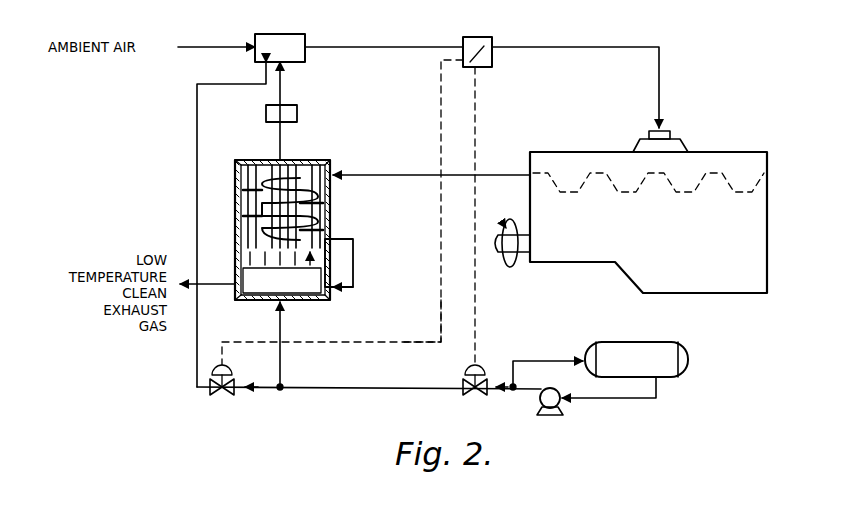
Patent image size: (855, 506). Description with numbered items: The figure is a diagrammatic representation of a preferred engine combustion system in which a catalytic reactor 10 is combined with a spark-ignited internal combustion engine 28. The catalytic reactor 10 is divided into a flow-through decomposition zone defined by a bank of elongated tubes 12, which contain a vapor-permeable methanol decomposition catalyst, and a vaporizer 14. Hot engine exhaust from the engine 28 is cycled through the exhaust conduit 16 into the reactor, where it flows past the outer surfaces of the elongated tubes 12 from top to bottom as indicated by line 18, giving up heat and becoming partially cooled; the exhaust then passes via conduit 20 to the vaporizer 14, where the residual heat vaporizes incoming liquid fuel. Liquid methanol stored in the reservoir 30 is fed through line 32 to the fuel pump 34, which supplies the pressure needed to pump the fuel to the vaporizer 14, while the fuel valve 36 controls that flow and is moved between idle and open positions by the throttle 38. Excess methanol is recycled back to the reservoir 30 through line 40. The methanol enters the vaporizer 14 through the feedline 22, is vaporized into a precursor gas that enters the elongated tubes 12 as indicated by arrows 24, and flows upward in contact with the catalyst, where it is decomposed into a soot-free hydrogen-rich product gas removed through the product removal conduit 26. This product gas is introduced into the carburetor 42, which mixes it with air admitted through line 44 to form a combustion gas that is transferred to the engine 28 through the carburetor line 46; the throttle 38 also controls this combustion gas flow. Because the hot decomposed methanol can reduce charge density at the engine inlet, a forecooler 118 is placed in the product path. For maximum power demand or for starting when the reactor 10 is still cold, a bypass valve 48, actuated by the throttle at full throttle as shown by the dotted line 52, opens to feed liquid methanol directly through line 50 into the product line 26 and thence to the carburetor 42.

The catalytic reactor 10 is at (285, 207).
The elongated tubes 12 is at (243, 165).
The vaporizer 14 is at (323, 298).
The exhaust conduit 16 is at (507, 168).
The line indicating exhaust gas flow 18 is at (305, 220).
The conduit 20 is at (354, 262).
The feedline 22 is at (358, 386).
The arrows 24 is at (300, 266).
The product removal conduit 26 is at (282, 142).
The internal combustion engine 28 is at (700, 152).
The reservoir 30 is at (640, 342).
The line 32 is at (660, 388).
The fuel pump 34 is at (563, 406).
The fuel valve 36 is at (464, 372).
The throttle 38 is at (479, 37).
The line 40 is at (553, 360).
The carburetor 42 is at (263, 34).
The line 44 is at (222, 45).
The carburetor line 46 is at (422, 46).
The bypass valve 48 is at (222, 396).
The line 50 is at (197, 168).
The dotted line 52 is at (440, 330).
The forecooler 118 is at (297, 105).